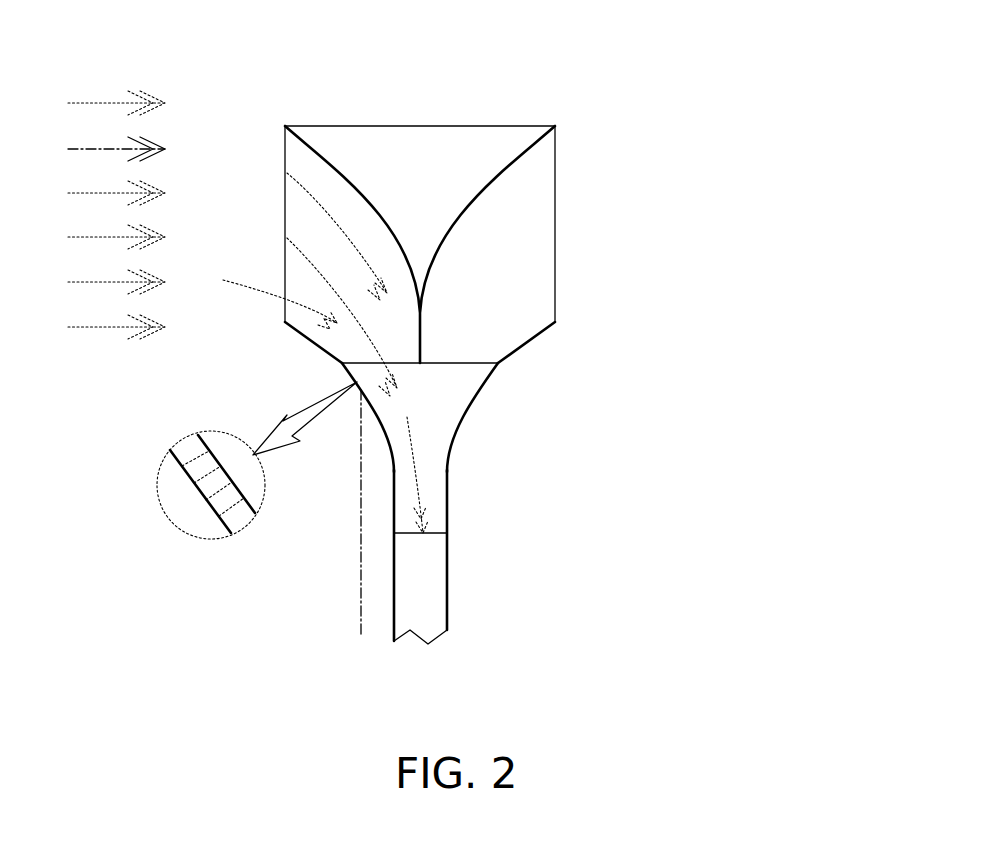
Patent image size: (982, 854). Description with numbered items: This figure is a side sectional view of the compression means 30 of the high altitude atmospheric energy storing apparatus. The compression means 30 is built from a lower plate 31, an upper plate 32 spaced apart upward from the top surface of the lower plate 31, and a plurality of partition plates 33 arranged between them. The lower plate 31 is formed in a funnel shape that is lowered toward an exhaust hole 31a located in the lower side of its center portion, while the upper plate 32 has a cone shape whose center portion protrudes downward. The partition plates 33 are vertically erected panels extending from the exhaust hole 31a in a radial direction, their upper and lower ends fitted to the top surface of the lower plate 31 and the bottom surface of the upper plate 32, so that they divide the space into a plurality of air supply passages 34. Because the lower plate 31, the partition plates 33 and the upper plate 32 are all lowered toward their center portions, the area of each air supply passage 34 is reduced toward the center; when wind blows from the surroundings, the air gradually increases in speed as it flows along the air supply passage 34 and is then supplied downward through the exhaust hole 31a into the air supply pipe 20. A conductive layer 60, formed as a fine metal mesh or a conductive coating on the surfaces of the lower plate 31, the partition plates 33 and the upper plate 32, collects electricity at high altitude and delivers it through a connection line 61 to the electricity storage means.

The air supply pipe 20 is at (448, 582).
The compression means 30 is at (642, 233).
The lower plate 31 is at (477, 388).
The exhaust hole 31a is at (433, 473).
The upper plate 32 is at (482, 174).
The partition plates 33 is at (452, 362).
The air supply passages 34 is at (297, 208).
The conductive layer 60 is at (228, 432).
The connection line 61 is at (361, 538).